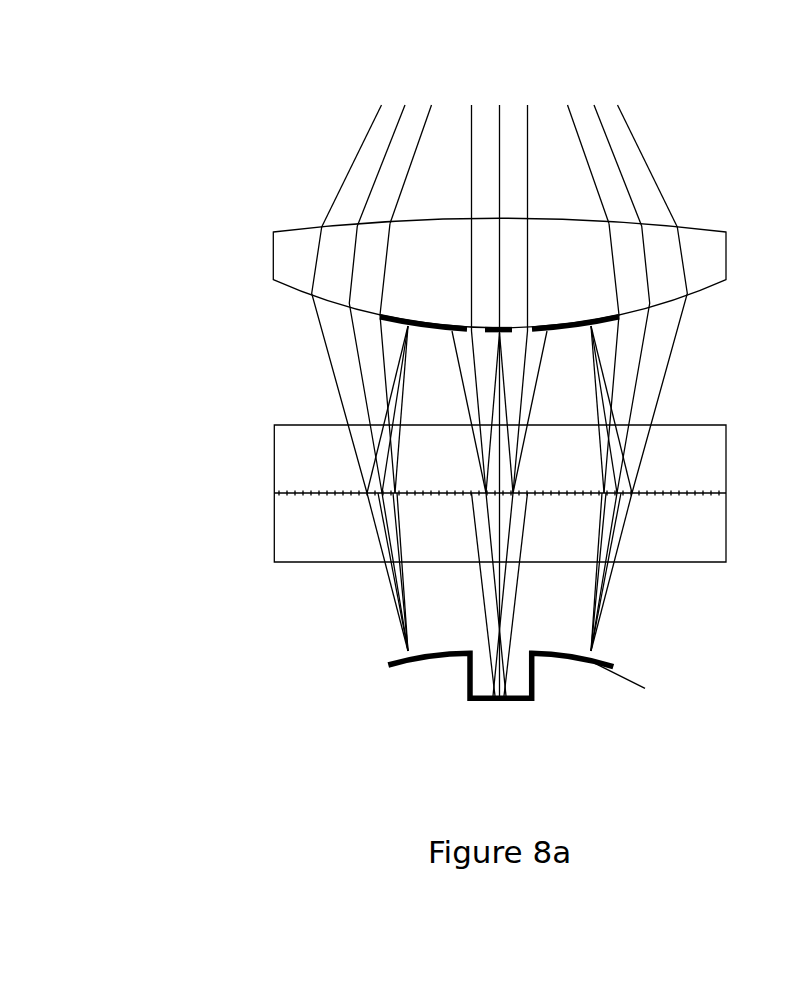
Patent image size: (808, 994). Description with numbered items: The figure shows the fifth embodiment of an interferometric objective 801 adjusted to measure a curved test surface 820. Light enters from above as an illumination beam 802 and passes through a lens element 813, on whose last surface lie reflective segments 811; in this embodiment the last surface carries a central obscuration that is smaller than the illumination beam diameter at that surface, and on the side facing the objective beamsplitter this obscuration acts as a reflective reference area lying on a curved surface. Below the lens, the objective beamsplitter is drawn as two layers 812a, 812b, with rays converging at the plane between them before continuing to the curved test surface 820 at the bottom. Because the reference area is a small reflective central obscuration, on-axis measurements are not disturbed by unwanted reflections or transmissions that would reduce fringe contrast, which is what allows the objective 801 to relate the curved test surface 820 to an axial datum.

The interferometric objective 801 is at (222, 187).
The incident light beam 802 is at (488, 102).
The lens 813 is at (288, 247).
The reflective segments on lens surface 811 is at (377, 316).
The first layer of microlens array plate 812a is at (295, 456).
The second layer of microlens array plate 812b is at (303, 528).
The curved test surface 820 is at (390, 664).